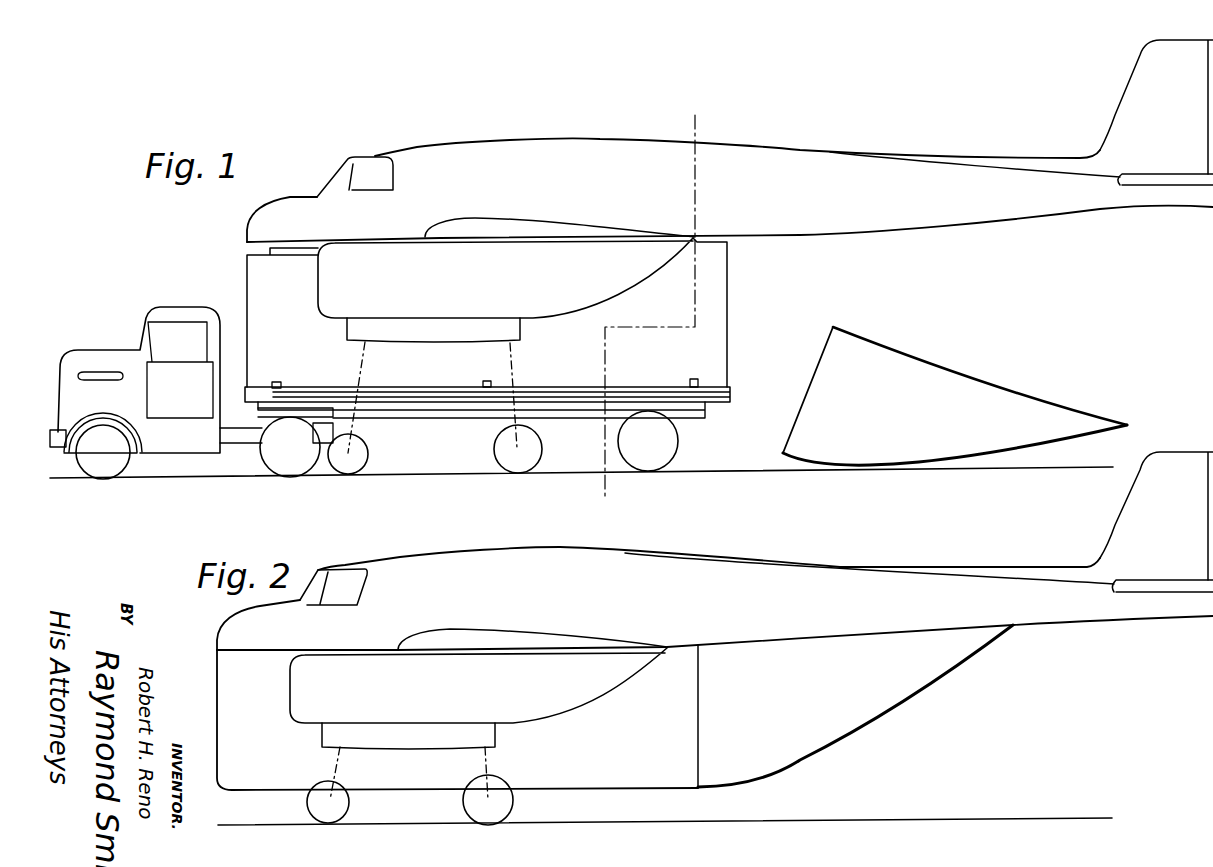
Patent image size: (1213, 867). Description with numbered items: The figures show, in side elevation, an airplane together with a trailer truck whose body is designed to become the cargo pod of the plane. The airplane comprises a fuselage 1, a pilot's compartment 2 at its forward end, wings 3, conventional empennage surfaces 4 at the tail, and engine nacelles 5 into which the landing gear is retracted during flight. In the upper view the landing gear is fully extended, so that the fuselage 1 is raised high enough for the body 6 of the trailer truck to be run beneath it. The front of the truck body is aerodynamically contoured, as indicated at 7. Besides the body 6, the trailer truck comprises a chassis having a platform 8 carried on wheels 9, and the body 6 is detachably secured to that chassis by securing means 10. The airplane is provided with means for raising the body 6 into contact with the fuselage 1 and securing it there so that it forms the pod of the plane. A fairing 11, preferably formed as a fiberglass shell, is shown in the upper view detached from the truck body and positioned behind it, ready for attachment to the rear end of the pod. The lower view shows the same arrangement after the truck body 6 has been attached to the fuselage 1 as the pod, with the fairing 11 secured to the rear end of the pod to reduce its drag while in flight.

In FIG. 1, the fuselage 1 is at (581, 153).
In FIG. 2, the fuselage 1 is at (497, 565).
In FIG. 1, the pilot's compartment 2 is at (370, 174).
In FIG. 2, the pilot's compartment 2 is at (346, 582).
In FIG. 1, the wings 3 is at (572, 206).
In FIG. 2, the wings 3 is at (541, 620).
In FIG. 1, the empennage surfaces 4 is at (1146, 102).
In FIG. 2, the empennage surfaces 4 is at (1146, 504).
In FIG. 1, the engine nacelles 5 is at (486, 288).
In FIG. 2, the engine nacelles 5 is at (460, 682).
In FIG. 1, the body of a trailer truck 6 is at (267, 289).
In FIG. 2, the body of a trailer truck 6 is at (233, 690).
In FIG. 1, the aerodynamically contoured front of the truck body 7 is at (705, 124).
In FIG. 1, the platform 8 is at (446, 384).
In FIG. 1, the wheels 9 is at (275, 461).
In FIG. 1, the means for detachably securing the body to the chassis 10 is at (294, 382).
In FIG. 1, the fairing 11 is at (928, 412).
In FIG. 2, the fairing 11 is at (856, 681).